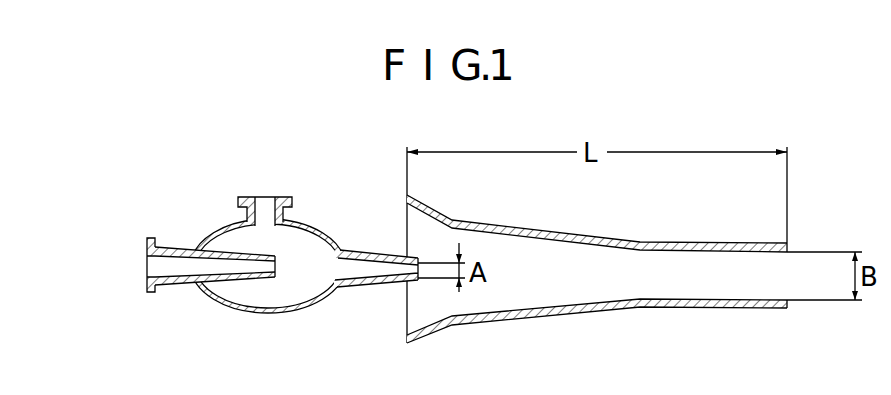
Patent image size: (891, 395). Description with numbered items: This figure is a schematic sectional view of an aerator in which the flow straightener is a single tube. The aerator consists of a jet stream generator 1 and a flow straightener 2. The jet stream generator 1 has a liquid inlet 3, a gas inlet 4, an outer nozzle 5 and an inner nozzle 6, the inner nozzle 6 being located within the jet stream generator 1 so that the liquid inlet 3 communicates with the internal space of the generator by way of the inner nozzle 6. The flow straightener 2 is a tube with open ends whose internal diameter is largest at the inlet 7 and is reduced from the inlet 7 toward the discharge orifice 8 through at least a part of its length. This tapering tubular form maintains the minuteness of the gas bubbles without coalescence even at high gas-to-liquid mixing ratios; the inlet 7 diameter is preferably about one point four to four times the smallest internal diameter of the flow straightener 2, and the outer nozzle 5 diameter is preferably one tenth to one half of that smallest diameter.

The jet stream generator 1 is at (278, 320).
The flow straightener 2 is at (619, 314).
The liquid inlet 3 is at (158, 263).
The gas inlet 4 is at (263, 205).
The outer nozzle 5 is at (402, 268).
The inner nozzle 6 is at (253, 275).
The inlet 7 is at (420, 309).
The discharge orifice 8 is at (775, 278).